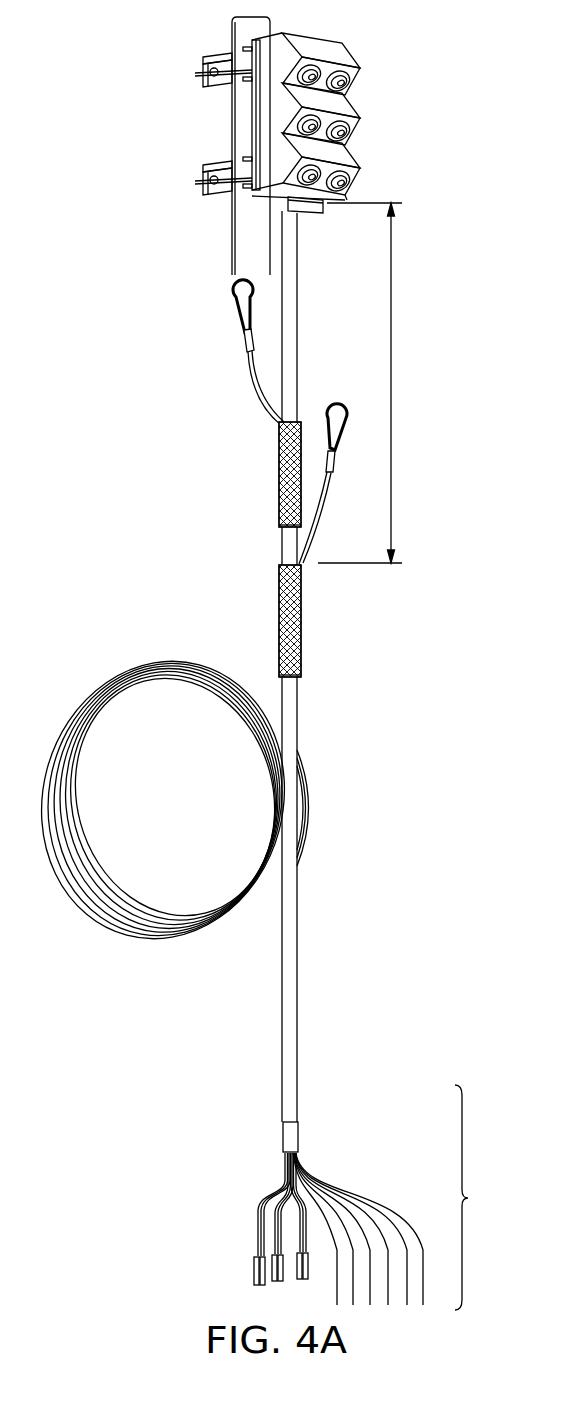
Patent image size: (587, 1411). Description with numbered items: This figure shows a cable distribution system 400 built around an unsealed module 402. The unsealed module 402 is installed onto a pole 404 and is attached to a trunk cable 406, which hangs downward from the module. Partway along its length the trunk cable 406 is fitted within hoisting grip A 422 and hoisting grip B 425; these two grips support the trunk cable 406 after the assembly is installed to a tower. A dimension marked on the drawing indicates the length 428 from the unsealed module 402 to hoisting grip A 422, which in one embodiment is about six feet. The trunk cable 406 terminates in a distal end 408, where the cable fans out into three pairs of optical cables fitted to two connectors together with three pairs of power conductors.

The cable distribution system 400 is at (404, 715).
The unsealed module 402 is at (314, 48).
The pole 404 is at (232, 240).
The trunk cable 406 is at (298, 996).
The distal end 408 is at (387, 1197).
The hoisting grip A 422 is at (279, 630).
The hoisting grip B 425 is at (279, 476).
The length 428 is at (393, 384).